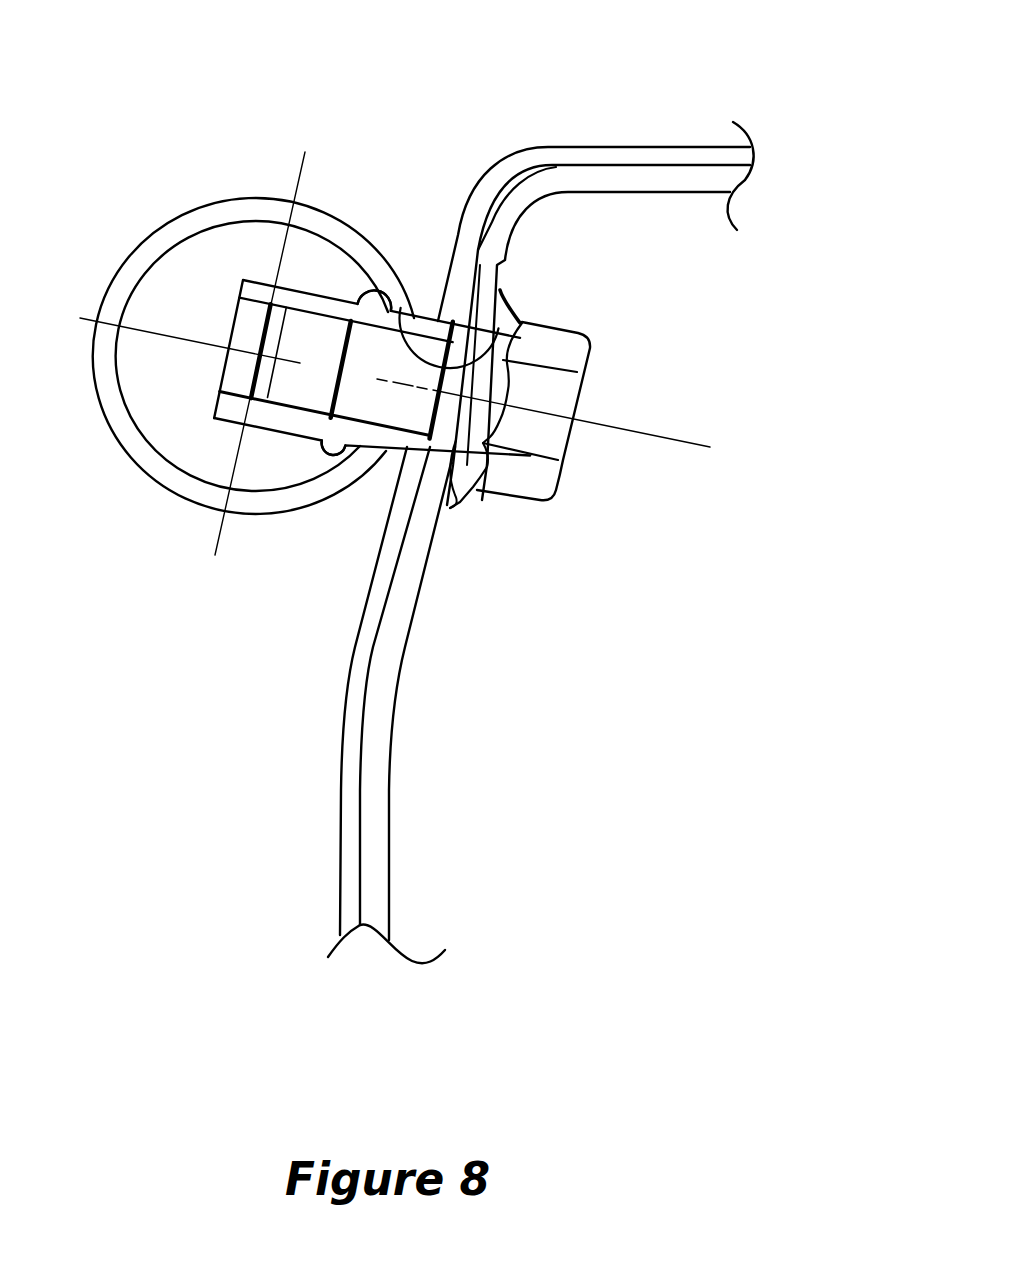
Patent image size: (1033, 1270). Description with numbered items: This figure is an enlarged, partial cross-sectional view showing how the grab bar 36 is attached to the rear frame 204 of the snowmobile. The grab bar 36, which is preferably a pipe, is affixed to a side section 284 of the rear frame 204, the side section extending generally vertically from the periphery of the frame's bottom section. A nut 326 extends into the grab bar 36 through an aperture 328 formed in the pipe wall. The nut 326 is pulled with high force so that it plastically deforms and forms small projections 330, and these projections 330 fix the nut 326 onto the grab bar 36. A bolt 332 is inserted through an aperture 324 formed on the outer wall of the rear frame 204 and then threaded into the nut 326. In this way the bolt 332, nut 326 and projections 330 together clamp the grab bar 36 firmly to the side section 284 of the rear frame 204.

The grab bar 36 is at (202, 202).
The rear frame 204 is at (638, 104).
The side section 284 is at (405, 648).
The aperture 324 is at (500, 423).
The nut 326 is at (313, 295).
The aperture 328 is at (520, 330).
The projection 330 is at (400, 445).
The bolt 332 is at (560, 398).